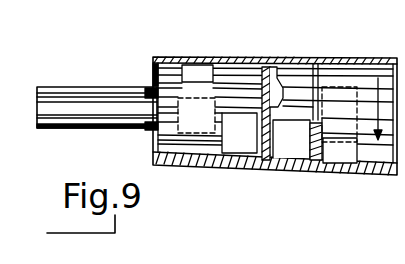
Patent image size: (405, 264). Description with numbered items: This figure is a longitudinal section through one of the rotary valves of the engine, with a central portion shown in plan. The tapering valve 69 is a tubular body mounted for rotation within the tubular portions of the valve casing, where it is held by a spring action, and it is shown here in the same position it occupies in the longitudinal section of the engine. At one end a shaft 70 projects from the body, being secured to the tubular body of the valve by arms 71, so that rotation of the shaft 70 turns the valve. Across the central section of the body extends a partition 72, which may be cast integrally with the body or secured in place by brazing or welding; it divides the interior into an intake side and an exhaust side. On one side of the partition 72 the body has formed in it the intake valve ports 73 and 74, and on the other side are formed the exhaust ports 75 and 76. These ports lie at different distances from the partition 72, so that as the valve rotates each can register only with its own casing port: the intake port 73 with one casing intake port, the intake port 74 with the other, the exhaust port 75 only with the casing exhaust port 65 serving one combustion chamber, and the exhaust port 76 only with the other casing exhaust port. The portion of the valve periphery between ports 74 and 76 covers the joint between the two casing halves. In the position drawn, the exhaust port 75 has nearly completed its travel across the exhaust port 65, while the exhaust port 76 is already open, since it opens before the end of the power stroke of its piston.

The exhaust port 65 is at (358, 57).
The tapering valve 69 is at (290, 58).
The shaft 70 is at (113, 103).
The arms 71 is at (155, 75).
The partition 72 is at (267, 80).
The intake valve port 73 is at (200, 72).
The intake valve port 74 is at (232, 152).
The exhaust port 75 is at (340, 152).
The exhaust port 76 is at (287, 152).